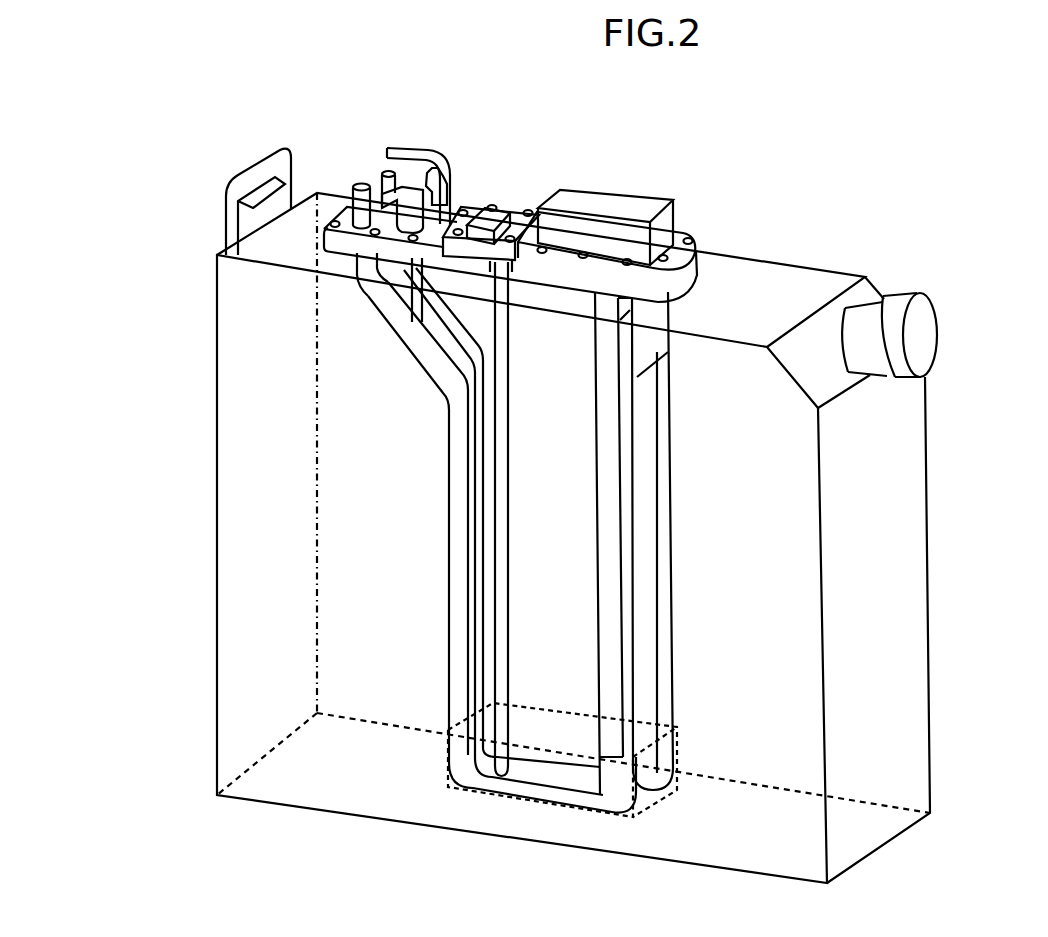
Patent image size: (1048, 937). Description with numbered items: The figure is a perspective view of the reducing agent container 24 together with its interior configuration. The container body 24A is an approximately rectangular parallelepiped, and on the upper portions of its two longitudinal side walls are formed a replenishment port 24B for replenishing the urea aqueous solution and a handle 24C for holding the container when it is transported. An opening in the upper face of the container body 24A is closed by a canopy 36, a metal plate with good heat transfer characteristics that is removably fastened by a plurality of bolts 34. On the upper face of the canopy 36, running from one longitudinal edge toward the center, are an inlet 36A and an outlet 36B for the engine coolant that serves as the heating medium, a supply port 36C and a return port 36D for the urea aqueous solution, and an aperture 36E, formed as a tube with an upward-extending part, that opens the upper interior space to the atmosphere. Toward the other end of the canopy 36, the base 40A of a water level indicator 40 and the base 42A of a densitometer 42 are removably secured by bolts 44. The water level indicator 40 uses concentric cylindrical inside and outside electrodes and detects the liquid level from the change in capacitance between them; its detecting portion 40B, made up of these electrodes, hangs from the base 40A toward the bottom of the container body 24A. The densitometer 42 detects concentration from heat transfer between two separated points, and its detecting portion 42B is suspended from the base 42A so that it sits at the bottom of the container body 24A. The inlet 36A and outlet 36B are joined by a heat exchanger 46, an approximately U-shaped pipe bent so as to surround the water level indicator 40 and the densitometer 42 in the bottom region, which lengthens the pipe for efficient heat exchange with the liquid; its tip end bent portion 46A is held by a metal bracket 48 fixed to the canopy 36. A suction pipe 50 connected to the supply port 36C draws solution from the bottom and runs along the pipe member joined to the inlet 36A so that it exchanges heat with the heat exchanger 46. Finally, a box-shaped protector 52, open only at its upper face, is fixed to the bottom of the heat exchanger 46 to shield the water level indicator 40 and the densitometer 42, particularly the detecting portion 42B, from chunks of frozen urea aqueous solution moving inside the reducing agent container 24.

The reducing agent container 24 is at (912, 248).
The container body 24A is at (910, 522).
The replenishment port 24B is at (922, 335).
The handle 24C is at (226, 203).
The bolts 34 is at (382, 253).
The canopy 36 is at (343, 251).
The inlet 36A is at (360, 184).
The outlet 36B is at (388, 171).
The supply port 36C is at (408, 190).
The return port 36D is at (446, 184).
The aperture 36E is at (432, 150).
The water level indicator 40 is at (500, 202).
The base of water level indicator 40A is at (497, 265).
The detecting portion of water level indicator 40B is at (505, 428).
The densitometer 42 is at (677, 198).
The base of densitometer 42A is at (690, 240).
The detecting portion of densitometer 42B is at (612, 783).
The bolts 44 is at (531, 210).
The heat exchanger 46 is at (450, 538).
The tip end bent portion 46A is at (620, 300).
The metal bracket 48 is at (655, 346).
The suction pipe 50 is at (418, 324).
The protector 52 is at (660, 806).